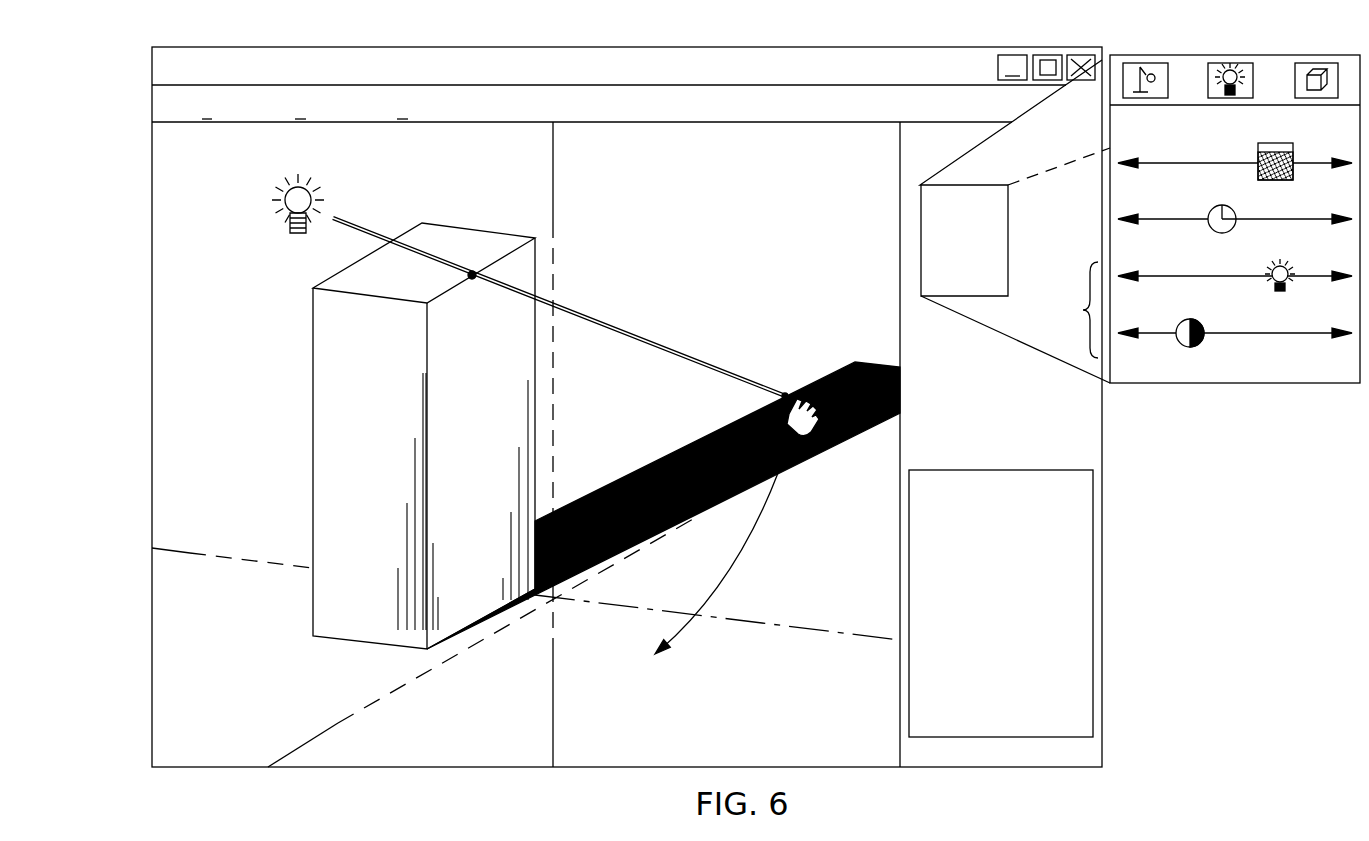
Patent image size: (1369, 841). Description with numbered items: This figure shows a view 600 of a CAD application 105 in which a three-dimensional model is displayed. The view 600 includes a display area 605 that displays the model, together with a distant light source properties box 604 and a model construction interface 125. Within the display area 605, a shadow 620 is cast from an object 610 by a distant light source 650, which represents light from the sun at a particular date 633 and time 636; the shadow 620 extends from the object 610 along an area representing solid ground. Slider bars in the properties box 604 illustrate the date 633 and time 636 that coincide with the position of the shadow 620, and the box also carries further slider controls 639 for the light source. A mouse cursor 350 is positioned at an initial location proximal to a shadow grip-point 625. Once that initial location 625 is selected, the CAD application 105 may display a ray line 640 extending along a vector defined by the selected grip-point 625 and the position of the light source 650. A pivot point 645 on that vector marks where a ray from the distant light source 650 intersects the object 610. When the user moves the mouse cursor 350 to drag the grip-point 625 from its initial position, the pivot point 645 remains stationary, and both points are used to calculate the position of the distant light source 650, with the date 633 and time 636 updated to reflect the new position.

The view 600 is at (232, 27).
The CAD application 105 is at (609, 62).
The distant light source properties box 604 is at (1268, 65).
The date 633 is at (1278, 143).
The time 636 is at (1216, 205).
The light intensity and contrast sliders 639 is at (1012, 297).
The distant light source 650 is at (281, 200).
The pivot point 645 is at (472, 281).
The ray line 640 is at (630, 332).
The shadow grip-point 625 is at (788, 392).
The shadow 620 is at (878, 362).
The mouse cursor 350 is at (820, 418).
The object 610 is at (328, 467).
The model construction interface 125 is at (920, 695).
The display area 605 is at (189, 748).